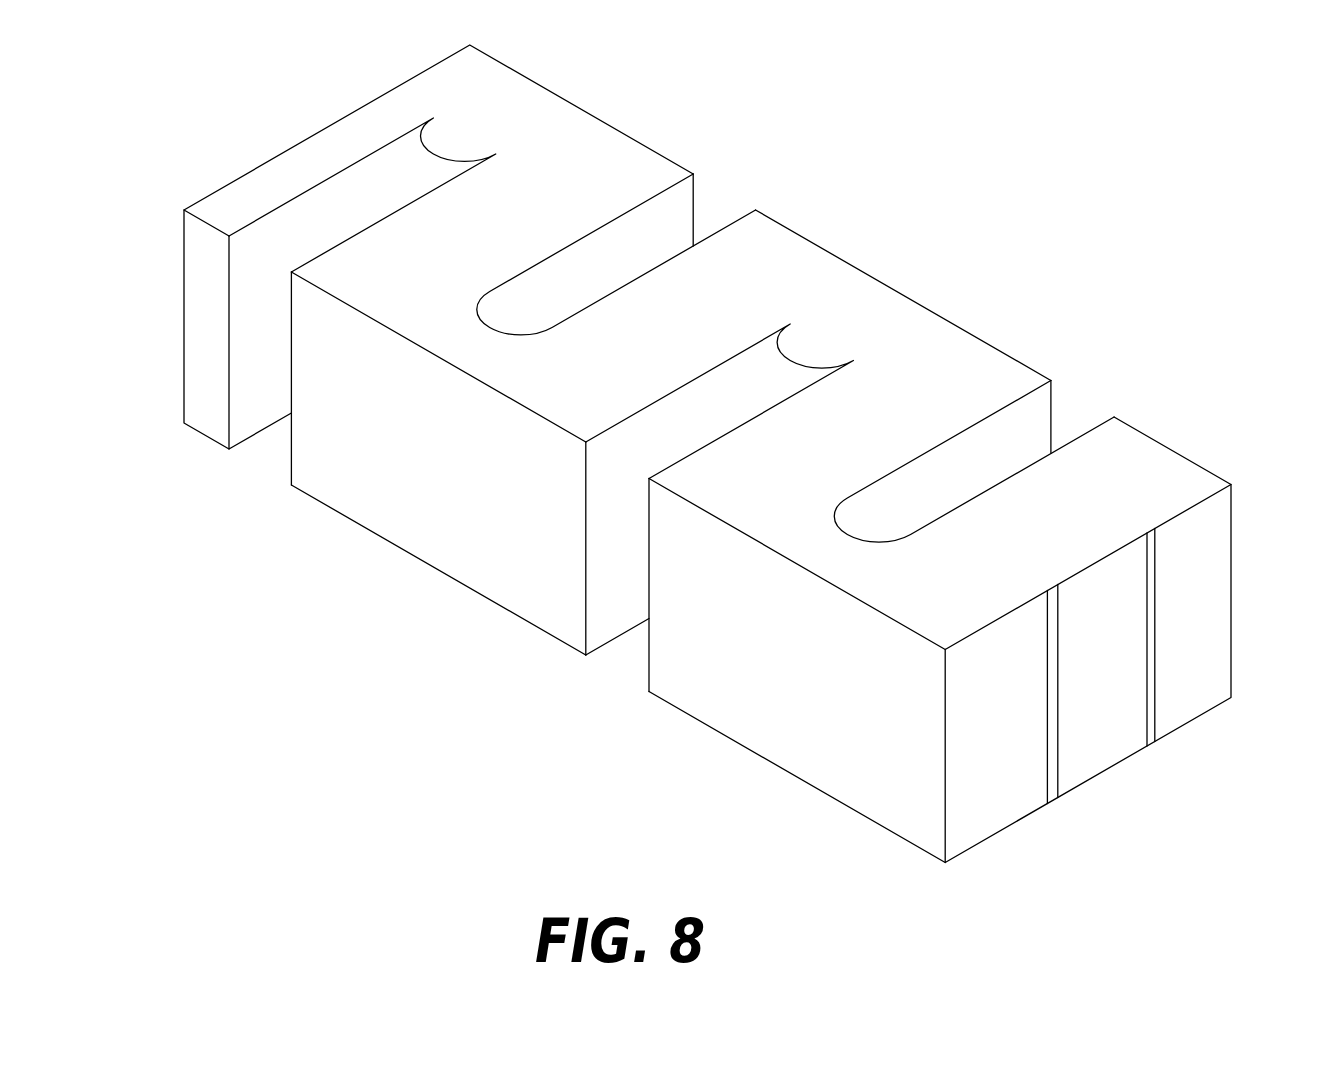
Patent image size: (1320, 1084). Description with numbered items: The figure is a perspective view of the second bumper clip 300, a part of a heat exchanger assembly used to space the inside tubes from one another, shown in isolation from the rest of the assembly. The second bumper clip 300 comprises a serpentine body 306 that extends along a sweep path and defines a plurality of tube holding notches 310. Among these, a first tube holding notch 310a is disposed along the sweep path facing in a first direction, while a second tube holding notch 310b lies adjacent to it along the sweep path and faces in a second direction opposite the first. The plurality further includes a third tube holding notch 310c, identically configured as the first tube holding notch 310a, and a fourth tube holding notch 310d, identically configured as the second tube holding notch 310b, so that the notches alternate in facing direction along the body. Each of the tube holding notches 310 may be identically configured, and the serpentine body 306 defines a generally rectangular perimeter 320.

The second bumper clip 300 is at (936, 181).
The serpentine body 306 is at (845, 444).
The tube holding notches 310 is at (248, 453).
The first tube holding notch 310a is at (275, 468).
The second tube holding notch 310b is at (733, 213).
The third tube holding notch 310c is at (605, 653).
The fourth tube holding notch 310d is at (1083, 428).
The generally rectangular perimeter 320 is at (831, 700).